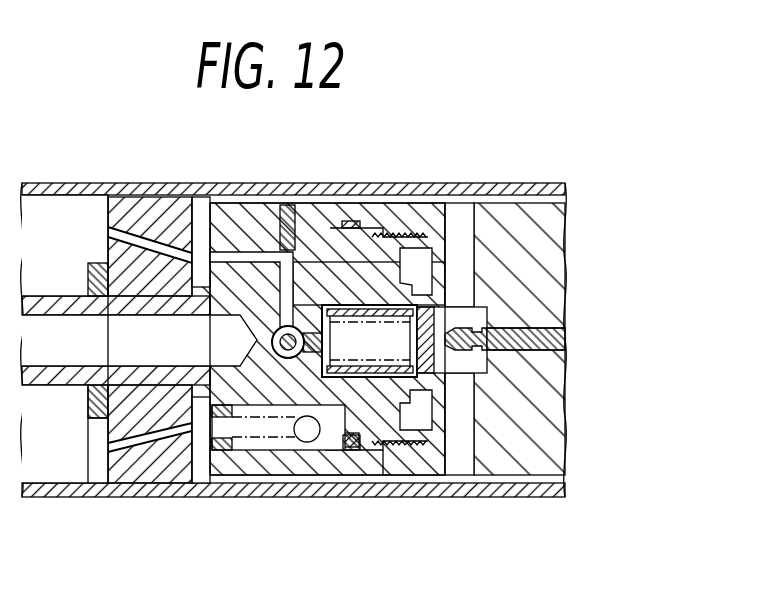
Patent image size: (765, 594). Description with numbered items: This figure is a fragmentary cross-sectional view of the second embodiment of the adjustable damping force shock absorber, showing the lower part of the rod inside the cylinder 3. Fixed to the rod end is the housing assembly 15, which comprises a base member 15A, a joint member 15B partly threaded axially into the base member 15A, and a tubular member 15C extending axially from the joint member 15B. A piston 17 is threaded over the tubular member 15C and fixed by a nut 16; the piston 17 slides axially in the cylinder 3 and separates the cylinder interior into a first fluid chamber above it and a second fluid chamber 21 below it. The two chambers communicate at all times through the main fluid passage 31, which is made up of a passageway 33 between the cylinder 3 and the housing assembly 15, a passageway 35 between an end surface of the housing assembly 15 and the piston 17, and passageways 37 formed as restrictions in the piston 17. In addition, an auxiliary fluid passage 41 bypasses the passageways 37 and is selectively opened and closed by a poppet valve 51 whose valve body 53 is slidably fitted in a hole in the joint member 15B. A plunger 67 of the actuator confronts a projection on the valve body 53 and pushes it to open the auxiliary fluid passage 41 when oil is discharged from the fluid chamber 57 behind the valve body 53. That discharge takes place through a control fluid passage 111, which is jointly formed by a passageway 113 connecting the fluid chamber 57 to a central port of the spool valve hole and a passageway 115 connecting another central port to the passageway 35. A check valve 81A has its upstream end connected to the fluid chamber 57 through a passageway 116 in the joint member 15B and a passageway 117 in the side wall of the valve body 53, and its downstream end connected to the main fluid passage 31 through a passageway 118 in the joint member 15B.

The cylinder 3 is at (497, 183).
The housing assembly 15 is at (549, 225).
The base member 15A is at (553, 262).
The joint member 15B is at (305, 300).
The tubular member 15C is at (157, 212).
The nut 16 is at (94, 420).
The piston 17 is at (150, 465).
The second fluid chamber 21 is at (55, 210).
The main fluid passage 31 is at (440, 205).
The passageway 33 is at (419, 188).
The passageway 35 is at (202, 222).
The passageways 37 is at (118, 218).
The auxiliary fluid passage 41 is at (456, 223).
The poppet valve 51 is at (455, 352).
The valve body 53 is at (407, 432).
The fluid chamber 57 is at (392, 455).
The plunger 67 is at (523, 352).
The check valve 81A is at (269, 440).
The control fluid passage 111 is at (281, 326).
The passageway 113 is at (381, 365).
The passageway 115 is at (262, 258).
The passageway 116 is at (309, 442).
The passageway 117 is at (345, 450).
The passageway 118 is at (224, 452).